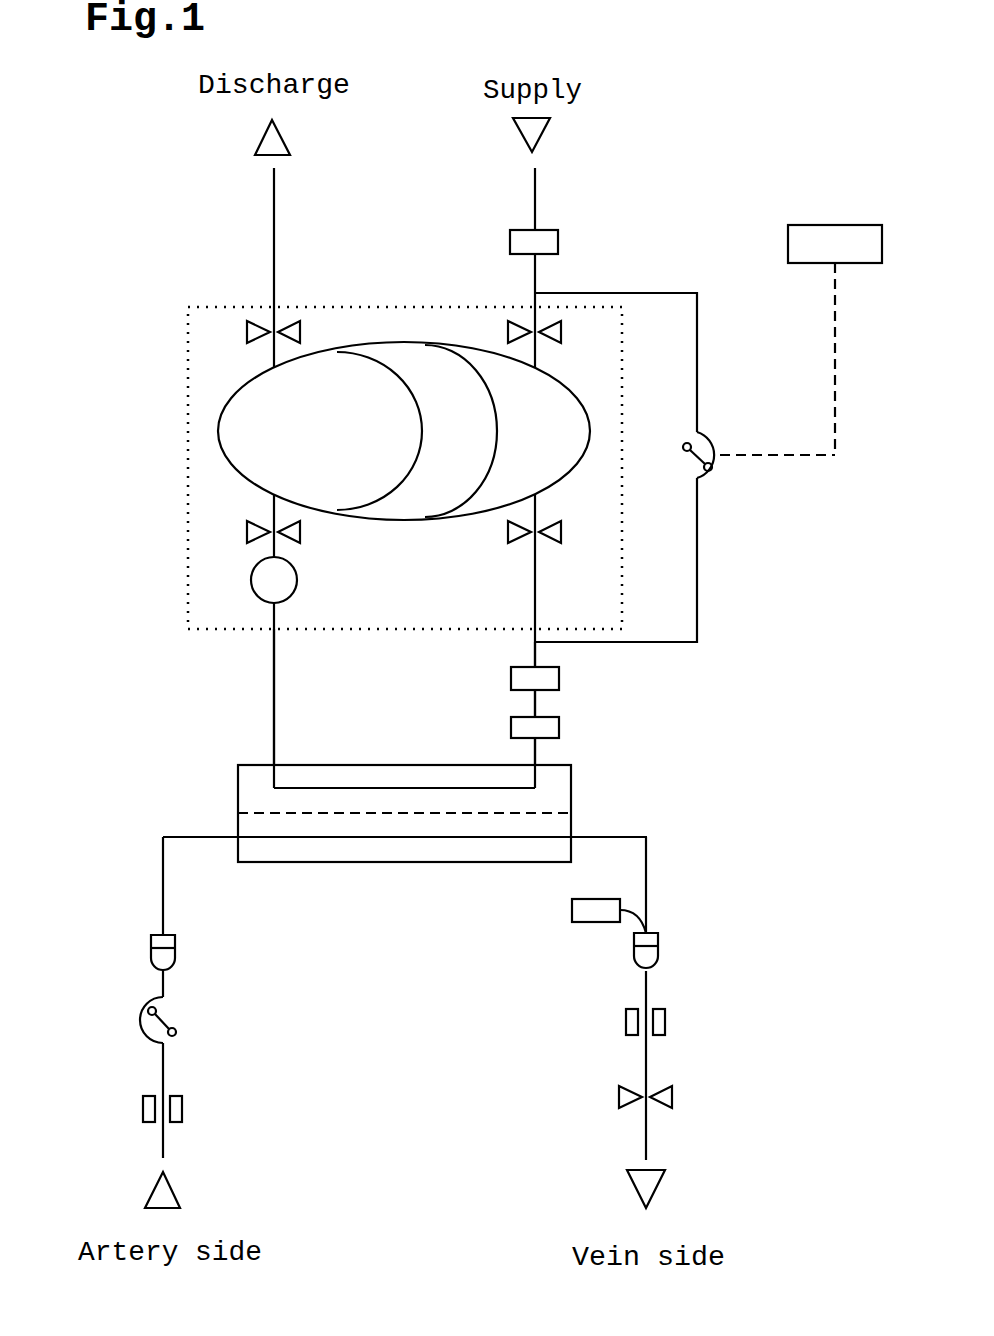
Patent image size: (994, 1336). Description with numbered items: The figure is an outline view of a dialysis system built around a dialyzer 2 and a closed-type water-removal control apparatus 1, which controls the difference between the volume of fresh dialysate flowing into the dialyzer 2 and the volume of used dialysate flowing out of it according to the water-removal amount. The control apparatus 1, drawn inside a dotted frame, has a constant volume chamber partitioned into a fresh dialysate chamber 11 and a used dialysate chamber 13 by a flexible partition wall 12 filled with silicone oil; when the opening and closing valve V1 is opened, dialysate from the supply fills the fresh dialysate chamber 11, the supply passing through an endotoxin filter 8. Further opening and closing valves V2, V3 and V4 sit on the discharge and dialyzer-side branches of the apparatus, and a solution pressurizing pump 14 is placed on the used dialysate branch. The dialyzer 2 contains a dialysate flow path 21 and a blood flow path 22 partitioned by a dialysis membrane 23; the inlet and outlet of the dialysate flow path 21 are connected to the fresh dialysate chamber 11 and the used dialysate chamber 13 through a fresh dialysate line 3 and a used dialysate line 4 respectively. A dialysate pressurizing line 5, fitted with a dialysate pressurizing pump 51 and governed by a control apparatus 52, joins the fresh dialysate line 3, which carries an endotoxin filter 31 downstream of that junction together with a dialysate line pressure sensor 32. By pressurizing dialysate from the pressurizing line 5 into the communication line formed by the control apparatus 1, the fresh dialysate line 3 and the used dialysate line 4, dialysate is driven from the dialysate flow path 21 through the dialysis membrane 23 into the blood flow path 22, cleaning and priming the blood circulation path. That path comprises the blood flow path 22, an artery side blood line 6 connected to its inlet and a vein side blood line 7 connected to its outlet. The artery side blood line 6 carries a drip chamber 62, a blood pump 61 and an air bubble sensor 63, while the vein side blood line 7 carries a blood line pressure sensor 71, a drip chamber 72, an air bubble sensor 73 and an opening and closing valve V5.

The closed-type water-removal control apparatus 1 is at (389, 478).
The dialyzer 2 is at (363, 819).
The fresh dialysate line 3 is at (472, 703).
The used dialysate line 4 is at (207, 697).
The dialysate pressurizing line 5 is at (690, 467).
The artery side blood line 6 is at (180, 997).
The vein side blood line 7 is at (625, 998).
The endotoxin filter 8 is at (573, 209).
The fresh dialysate chamber 11 is at (547, 450).
The flexible partition wall 12 is at (464, 450).
The used dialysate chamber 13 is at (330, 450).
The solution pressurizing pump 14 is at (325, 578).
The dialysate flow path 21 is at (316, 759).
The blood flow path 22 is at (347, 873).
The dialysis membrane 23 is at (327, 797).
The endotoxin filter 31 is at (586, 682).
The dialysate line pressure sensor 32 is at (598, 732).
The dialysate pressurizing pump 51 is at (764, 473).
The control apparatus 52 is at (806, 225).
The blood pump 61 is at (215, 1020).
The drip chamber 62 is at (218, 952).
The air bubble sensor 63 is at (224, 1096).
The blood line pressure sensor 71 is at (548, 940).
The drip chamber 72 is at (704, 944).
The air bubble sensor 73 is at (700, 1022).
The opening and closing valve V1 is at (598, 330).
The opening and closing valve V2 is at (194, 348).
The opening and closing valve V3 is at (599, 530).
The opening and closing valve V4 is at (205, 546).
The opening and closing valve V5 is at (709, 1092).